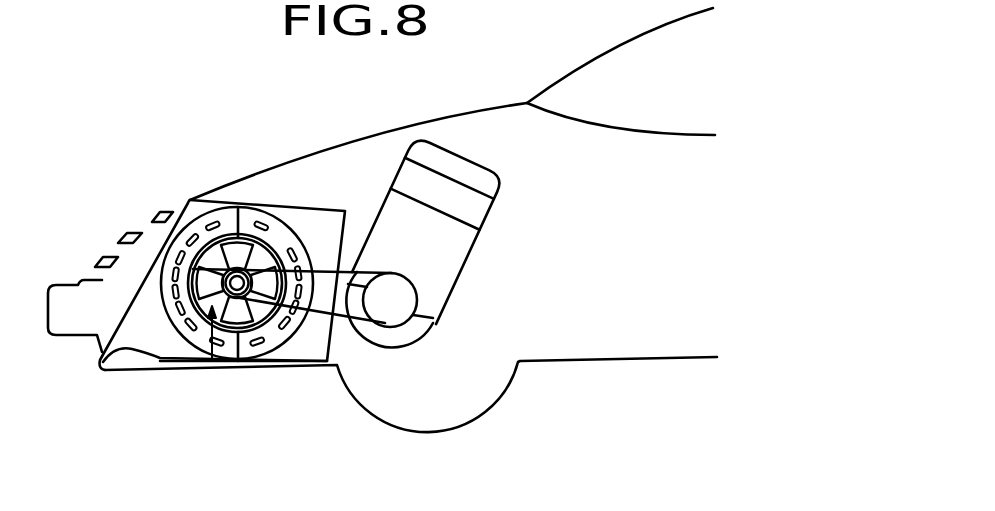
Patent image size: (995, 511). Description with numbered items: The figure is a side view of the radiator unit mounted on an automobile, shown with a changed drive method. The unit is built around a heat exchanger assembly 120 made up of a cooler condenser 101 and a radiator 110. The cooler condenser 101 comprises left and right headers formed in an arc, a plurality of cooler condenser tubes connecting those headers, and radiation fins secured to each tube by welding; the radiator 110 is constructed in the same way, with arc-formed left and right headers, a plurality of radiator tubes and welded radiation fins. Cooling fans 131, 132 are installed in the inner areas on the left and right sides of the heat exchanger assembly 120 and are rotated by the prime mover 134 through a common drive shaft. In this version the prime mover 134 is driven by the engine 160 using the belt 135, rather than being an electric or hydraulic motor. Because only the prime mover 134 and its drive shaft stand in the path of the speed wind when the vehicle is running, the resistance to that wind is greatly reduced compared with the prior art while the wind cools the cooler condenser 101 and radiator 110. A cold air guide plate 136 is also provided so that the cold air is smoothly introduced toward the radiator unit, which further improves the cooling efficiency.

The cooler condenser 101 is at (288, 238).
The radiator 110 is at (231, 229).
The heat exchanger assembly 120 is at (150, 317).
The cooling fan 131 is at (203, 267).
The cooling fan 132 is at (215, 214).
The prime mover 134 is at (212, 358).
The belt 135 is at (352, 268).
The cold air guide plate 136 is at (158, 358).
The engine 160 is at (478, 209).